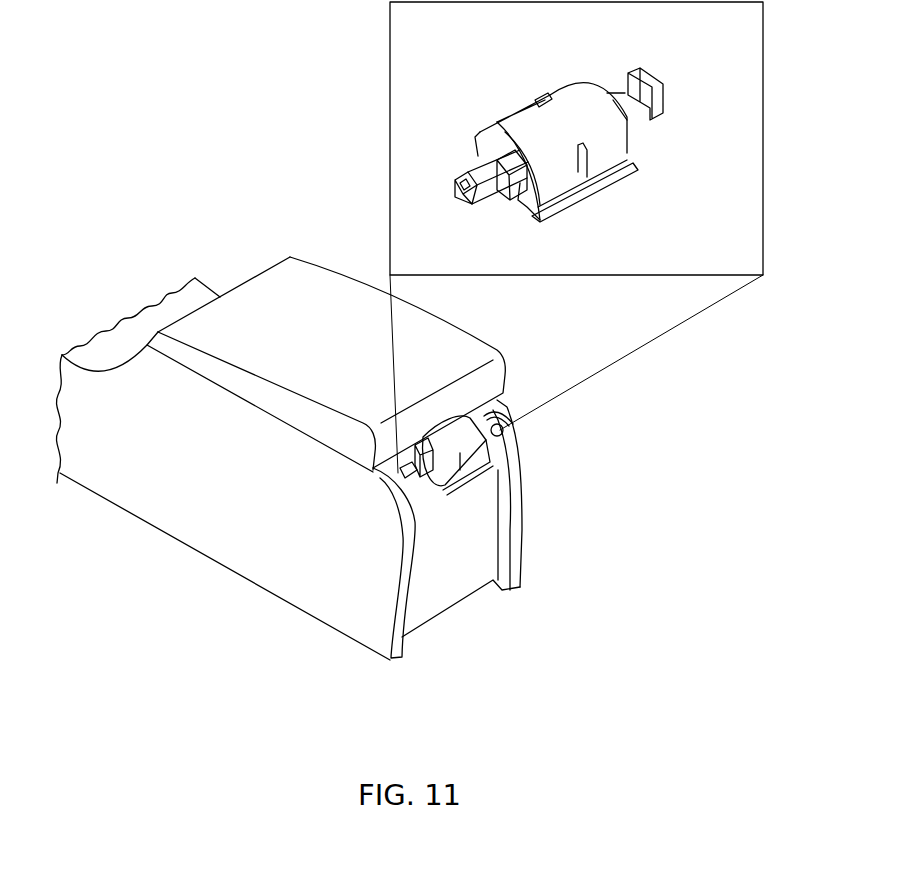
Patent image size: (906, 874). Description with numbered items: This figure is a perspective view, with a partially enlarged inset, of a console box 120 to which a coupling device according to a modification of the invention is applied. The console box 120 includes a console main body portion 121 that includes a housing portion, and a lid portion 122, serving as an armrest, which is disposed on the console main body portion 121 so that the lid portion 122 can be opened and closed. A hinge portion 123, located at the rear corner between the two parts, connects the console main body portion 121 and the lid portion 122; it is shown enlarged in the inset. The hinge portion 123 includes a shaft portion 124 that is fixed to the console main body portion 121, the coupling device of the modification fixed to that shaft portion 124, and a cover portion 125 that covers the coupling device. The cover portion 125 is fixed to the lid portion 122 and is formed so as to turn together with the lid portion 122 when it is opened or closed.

The console box 120 is at (229, 241).
The console main body portion 121 is at (227, 538).
The lid portion 122 is at (325, 290).
The hinge portion 123 is at (470, 450).
The shaft portion 124 is at (483, 188).
The cover portion 125 is at (597, 93).